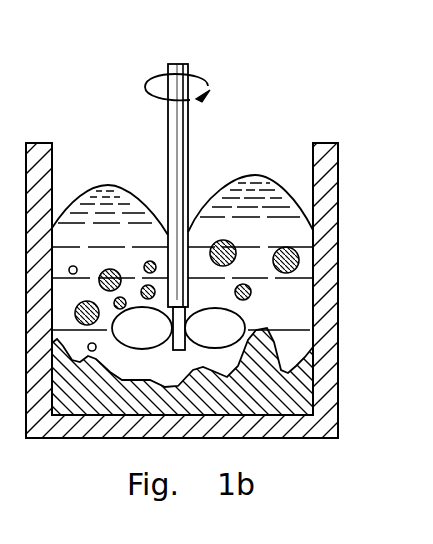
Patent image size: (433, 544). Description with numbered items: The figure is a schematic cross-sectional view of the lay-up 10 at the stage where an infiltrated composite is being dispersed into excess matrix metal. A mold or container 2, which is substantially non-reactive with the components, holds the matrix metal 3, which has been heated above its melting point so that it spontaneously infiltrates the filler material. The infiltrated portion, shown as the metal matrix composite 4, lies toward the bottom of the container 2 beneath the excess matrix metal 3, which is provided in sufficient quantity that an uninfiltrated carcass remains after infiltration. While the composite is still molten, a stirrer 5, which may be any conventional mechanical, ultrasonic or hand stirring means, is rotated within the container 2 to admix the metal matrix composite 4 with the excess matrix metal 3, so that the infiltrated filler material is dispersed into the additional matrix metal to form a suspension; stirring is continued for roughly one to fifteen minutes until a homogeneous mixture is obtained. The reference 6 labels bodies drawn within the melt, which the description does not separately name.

The lay-up 10 is at (292, 92).
The mold or container 2 is at (338, 177).
The matrix metal 3 is at (293, 302).
The metal matrix composite 4 is at (296, 373).
The stirrer 5 is at (188, 153).
The gas bubbles / particles 6 is at (298, 257).